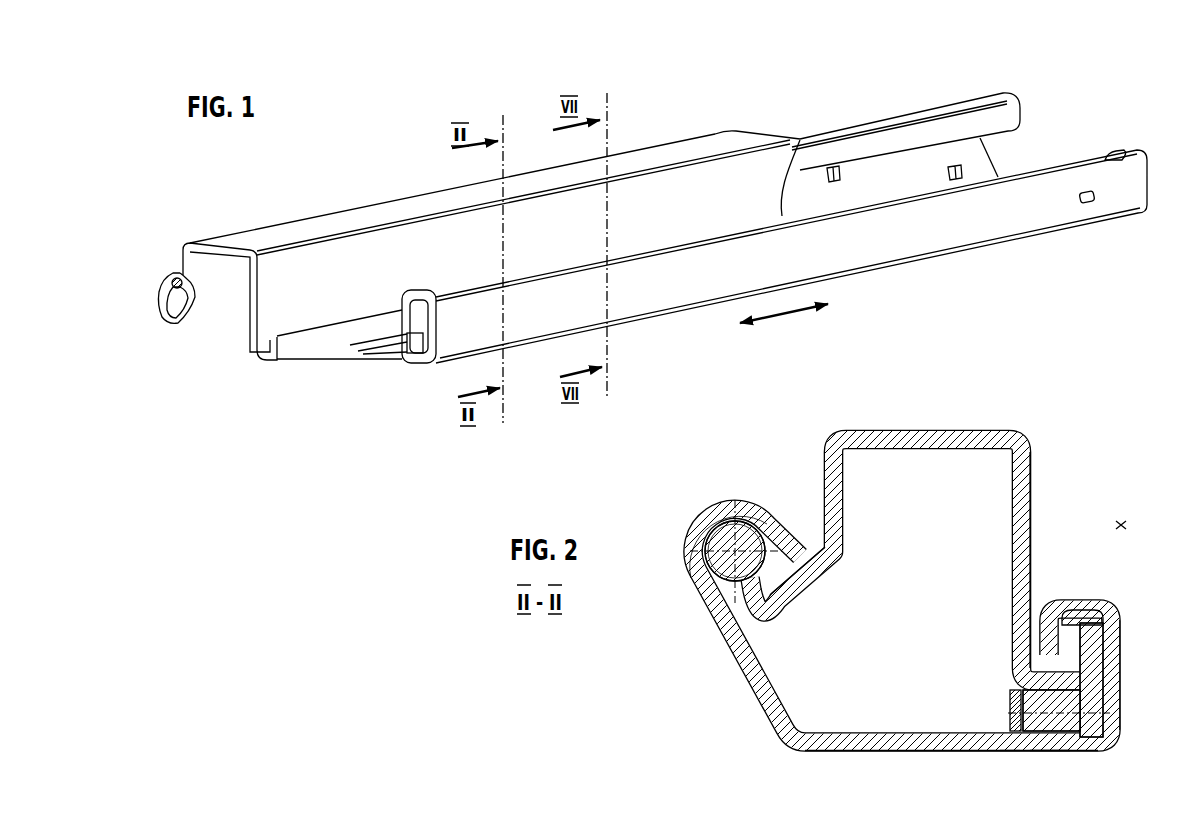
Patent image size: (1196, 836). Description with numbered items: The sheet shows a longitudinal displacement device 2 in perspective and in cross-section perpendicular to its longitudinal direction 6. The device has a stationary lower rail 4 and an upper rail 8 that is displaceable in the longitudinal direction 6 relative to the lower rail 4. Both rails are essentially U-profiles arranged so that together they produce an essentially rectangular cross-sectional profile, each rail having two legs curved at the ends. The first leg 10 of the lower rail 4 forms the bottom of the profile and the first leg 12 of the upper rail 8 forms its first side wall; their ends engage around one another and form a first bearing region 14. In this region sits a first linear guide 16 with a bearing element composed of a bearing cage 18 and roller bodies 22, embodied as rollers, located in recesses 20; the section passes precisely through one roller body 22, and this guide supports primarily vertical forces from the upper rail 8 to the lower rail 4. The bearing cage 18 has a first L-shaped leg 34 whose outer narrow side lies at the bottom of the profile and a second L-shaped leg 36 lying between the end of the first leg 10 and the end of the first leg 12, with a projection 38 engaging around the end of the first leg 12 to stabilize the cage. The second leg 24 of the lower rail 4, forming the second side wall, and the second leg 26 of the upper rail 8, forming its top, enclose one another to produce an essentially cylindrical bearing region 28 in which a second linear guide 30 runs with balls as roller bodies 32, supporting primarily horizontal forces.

In FIG. 1, the longitudinal displacement device 2 is at (627, 227).
In FIG. 2, the longitudinal displacement device 2 is at (908, 571).
In FIG. 1, the lower rail 4 is at (545, 332).
In FIG. 2, the lower rail 4 is at (930, 626).
In FIG. 1, the longitudinal direction 6 is at (790, 316).
In FIG. 2, the longitudinal direction 6 is at (1122, 525).
In FIG. 2, the upper rail 8 is at (915, 549).
In FIG. 2, the first leg of the lower rail 10 is at (873, 752).
In FIG. 2, the first leg of the upper rail 12 is at (1030, 520).
In FIG. 1, the first bearing region 14 is at (418, 343).
In FIG. 2, the first bearing region 14 is at (1073, 680).
In FIG. 2, the first linear guide 16 is at (1101, 635).
In FIG. 2, the bearing cage 18 is at (1123, 735).
In FIG. 2, the recesses 20 is at (1005, 752).
In FIG. 2, the roller bodies 22 is at (1048, 752).
In FIG. 2, the second leg of the lower rail 24 is at (720, 500).
In FIG. 2, the second leg of the upper rail 26 is at (824, 583).
In FIG. 1, the bearing region 28 is at (157, 293).
In FIG. 2, the bearing region 28 is at (713, 532).
In FIG. 2, the second linear guide 30 is at (717, 553).
In FIG. 2, the roller bodies 32 is at (723, 578).
In FIG. 2, the first L-shaped leg 34 is at (1010, 708).
In FIG. 2, the second L-shaped leg 36 is at (1112, 678).
In FIG. 2, the projection 38 is at (1075, 622).